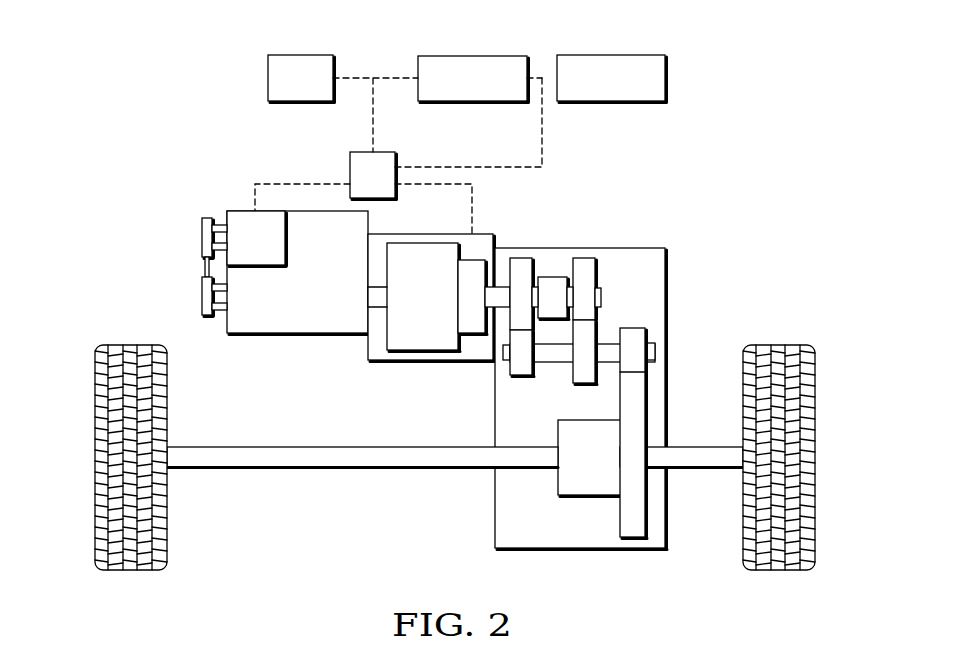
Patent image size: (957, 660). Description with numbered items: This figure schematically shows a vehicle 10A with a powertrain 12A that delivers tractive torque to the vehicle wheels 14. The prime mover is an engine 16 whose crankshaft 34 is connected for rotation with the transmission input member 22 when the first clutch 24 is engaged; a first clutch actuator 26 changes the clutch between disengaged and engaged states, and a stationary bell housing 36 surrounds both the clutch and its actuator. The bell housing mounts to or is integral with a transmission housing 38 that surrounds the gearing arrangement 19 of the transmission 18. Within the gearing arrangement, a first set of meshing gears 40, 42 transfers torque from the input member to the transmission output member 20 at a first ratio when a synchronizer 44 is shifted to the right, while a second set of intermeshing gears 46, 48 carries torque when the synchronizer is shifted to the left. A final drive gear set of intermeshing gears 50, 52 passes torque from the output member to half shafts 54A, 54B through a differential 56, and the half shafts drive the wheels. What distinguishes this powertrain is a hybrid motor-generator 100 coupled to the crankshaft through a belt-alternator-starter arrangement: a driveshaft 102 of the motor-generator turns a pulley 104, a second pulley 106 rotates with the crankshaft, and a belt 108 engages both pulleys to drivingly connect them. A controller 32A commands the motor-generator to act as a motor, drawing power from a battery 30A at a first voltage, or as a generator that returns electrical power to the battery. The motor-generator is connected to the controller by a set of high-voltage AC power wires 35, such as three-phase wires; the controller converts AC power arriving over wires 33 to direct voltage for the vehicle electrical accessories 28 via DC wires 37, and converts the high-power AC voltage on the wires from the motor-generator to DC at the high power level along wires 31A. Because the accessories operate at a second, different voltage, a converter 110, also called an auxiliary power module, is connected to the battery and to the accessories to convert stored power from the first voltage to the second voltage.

The vehicle 10A is at (761, 175).
The powertrain 12A is at (136, 221).
The vehicle wheels 14 is at (94, 457).
The engine 16 is at (298, 273).
The transmission 18 is at (613, 248).
The gearing arrangement 19 is at (638, 292).
The transmission output member 20 is at (659, 350).
The transmission input member 22 is at (503, 284).
The first clutch 24 is at (423, 297).
The first clutch actuator 26 is at (470, 334).
The vehicle electrical accessories 28 is at (612, 79).
The battery 30A is at (301, 79).
The wires 31A is at (369, 76).
The controller 32A is at (373, 176).
The wires 33 is at (451, 186).
The crankshaft 34 is at (220, 313).
The high voltage AC power wires 35 is at (303, 182).
The bell housing 36 is at (433, 361).
The DC wires 37 is at (472, 166).
The transmission housing 38 is at (582, 257).
The gear 40 is at (599, 272).
The gear 42 is at (573, 382).
The synchronizer 44 is at (552, 277).
The gear 46 is at (521, 257).
The gear 48 is at (519, 376).
The final drive gear 50 is at (648, 368).
The final drive gear 52 is at (634, 538).
The half shaft 54A is at (346, 468).
The half shaft 54B is at (731, 470).
The differential 56 is at (593, 458).
The hybrid motor-generator 100 is at (257, 239).
The driveshaft 102 is at (220, 225).
The pulley 104 is at (201, 238).
The pulley 106 is at (201, 295).
The belt 108 is at (205, 268).
The converter 110 is at (473, 79).